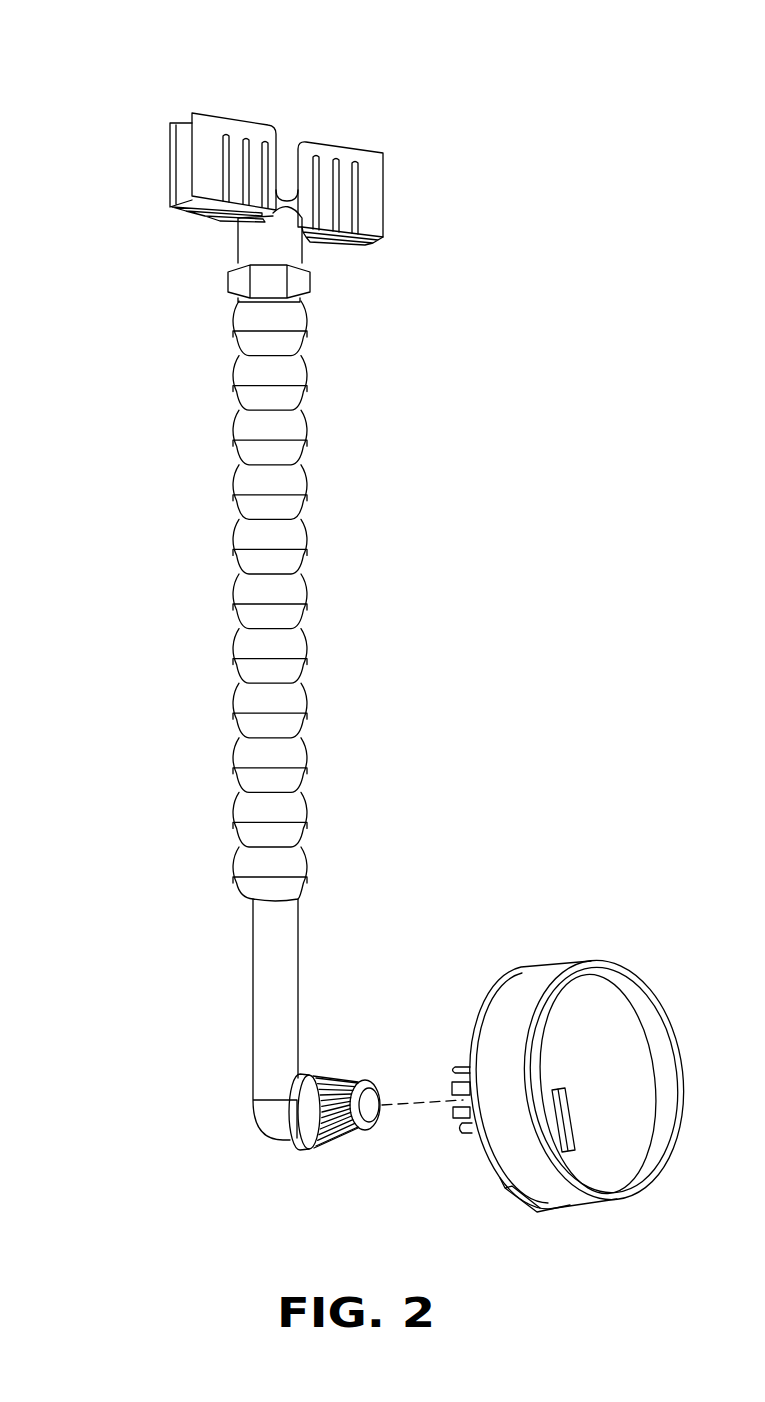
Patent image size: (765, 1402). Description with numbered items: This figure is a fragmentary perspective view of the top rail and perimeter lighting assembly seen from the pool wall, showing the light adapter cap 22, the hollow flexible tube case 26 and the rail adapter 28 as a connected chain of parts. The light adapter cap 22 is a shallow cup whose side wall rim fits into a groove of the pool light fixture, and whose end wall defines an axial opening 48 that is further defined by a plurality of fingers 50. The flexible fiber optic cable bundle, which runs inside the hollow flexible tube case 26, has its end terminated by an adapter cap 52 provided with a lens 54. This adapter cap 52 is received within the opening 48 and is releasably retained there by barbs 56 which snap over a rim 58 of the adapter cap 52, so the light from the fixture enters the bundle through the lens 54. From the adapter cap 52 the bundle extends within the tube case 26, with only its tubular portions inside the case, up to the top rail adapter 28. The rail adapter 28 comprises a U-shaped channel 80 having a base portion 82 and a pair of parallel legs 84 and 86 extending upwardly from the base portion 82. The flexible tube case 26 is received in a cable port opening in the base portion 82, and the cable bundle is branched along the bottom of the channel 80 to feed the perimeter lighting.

The light adapter cap 22 is at (531, 1044).
The hollow flexible tube case 26 is at (308, 697).
The rail adapter 28 is at (269, 151).
The axial opening 48 is at (431, 1076).
The fingers 50 is at (458, 1108).
The adapter cap 52 is at (337, 1075).
The lens 54 is at (373, 1117).
The barbs 56 is at (445, 1076).
The rim 58 is at (320, 1148).
The U-shaped channel 80 is at (157, 169).
The base portion 82 is at (330, 232).
The leg 84 is at (168, 140).
The leg 86 is at (373, 192).